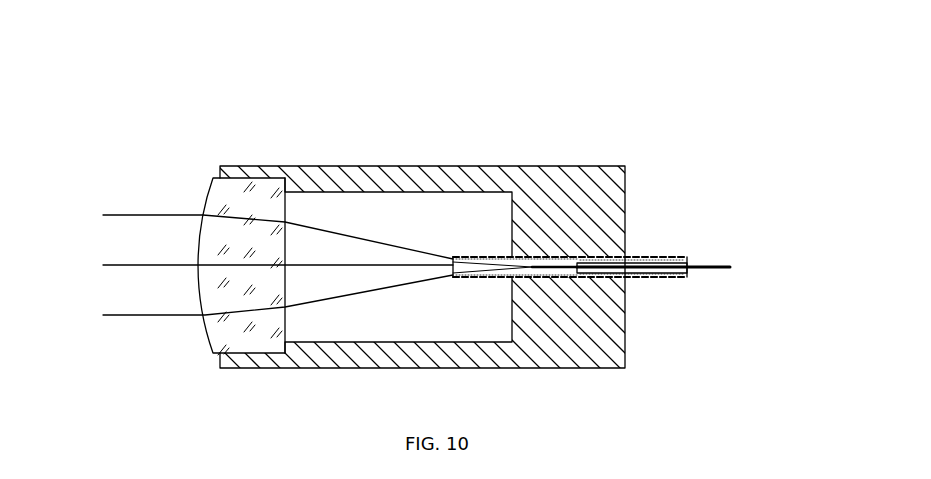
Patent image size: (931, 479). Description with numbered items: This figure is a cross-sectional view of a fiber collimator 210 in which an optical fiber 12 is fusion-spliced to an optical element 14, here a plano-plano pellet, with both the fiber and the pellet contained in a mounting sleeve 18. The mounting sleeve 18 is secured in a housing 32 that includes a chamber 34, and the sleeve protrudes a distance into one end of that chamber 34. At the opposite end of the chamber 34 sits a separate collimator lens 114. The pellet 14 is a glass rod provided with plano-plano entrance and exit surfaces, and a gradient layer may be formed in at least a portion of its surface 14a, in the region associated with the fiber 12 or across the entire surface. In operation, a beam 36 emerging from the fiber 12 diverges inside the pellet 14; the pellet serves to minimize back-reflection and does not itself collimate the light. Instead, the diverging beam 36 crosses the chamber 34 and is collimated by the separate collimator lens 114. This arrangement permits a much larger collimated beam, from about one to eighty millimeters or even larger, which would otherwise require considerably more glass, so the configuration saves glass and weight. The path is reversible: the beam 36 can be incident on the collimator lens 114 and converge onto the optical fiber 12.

The fiber collimator 210 is at (484, 136).
The housing 32 is at (627, 177).
The chamber 34 is at (412, 205).
The beam 36 is at (96, 215).
The collimator lens 114 is at (217, 333).
The optical element 14 is at (452, 278).
The surface of the optical element 14a is at (590, 278).
The mounting sleeve 18 is at (643, 278).
The optical fiber 12 is at (713, 266).